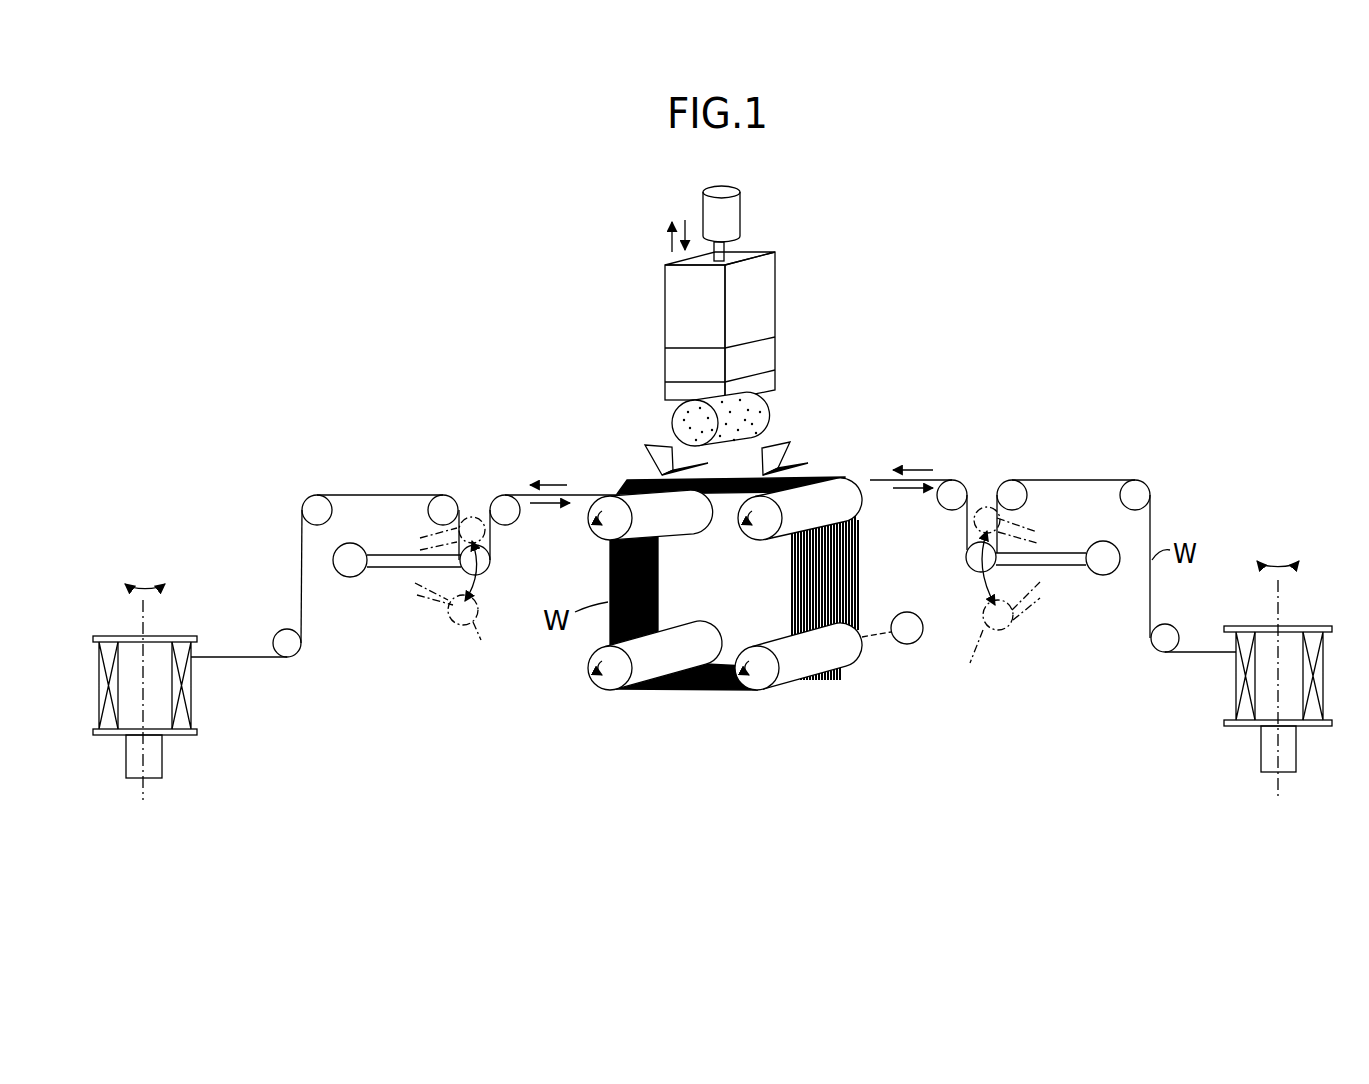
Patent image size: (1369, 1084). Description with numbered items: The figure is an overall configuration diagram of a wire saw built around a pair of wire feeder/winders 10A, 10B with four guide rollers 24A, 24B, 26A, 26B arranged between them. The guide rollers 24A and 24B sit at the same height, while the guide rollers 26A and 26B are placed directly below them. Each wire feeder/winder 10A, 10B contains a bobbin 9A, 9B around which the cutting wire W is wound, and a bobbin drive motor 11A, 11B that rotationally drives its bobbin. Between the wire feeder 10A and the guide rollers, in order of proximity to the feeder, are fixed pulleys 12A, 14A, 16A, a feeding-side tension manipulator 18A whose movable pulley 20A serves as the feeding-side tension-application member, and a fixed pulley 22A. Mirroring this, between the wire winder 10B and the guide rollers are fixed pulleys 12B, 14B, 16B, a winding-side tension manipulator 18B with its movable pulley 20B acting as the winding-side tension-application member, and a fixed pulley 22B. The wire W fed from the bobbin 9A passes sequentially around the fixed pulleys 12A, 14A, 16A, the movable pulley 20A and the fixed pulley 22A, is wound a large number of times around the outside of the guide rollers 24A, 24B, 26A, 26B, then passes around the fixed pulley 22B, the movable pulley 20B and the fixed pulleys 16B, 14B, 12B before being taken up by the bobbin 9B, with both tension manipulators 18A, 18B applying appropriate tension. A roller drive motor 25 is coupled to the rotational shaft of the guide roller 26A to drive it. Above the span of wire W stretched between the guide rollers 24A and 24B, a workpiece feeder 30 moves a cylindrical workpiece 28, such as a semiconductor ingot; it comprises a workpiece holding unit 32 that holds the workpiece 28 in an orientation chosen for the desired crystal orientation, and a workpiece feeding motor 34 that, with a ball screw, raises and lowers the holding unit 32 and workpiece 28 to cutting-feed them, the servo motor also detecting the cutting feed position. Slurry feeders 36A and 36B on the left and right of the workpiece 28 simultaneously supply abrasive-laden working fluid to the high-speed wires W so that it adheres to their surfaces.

The bobbin 9A is at (1323, 692).
The bobbin 9B is at (100, 697).
The wire feeder/winder 10A is at (1238, 737).
The wire feeder/winder 10B is at (195, 763).
The bobbin drive motor 11A is at (1293, 773).
The bobbin drive motor 11B is at (130, 780).
The fixed pulley 12A is at (1168, 625).
The fixed pulley 12B is at (287, 636).
The fixed pulley 14A is at (1135, 485).
The fixed pulley 14B is at (317, 500).
The fixed pulley 16A is at (1012, 485).
The fixed pulley 16B is at (442, 500).
The feeding-side tension manipulator 18A is at (1081, 582).
The winding-side tension manipulator 18B is at (377, 582).
The movable pulley 20A is at (986, 508).
The movable pulley 20B is at (480, 522).
The fixed pulley 22A is at (952, 485).
The fixed pulley 22B is at (505, 500).
The guide roller 24A is at (850, 508).
The guide roller 24B is at (604, 545).
The roller drive motor 25 is at (907, 647).
The guide roller 26A is at (852, 657).
The guide roller 26B is at (613, 683).
The workpiece 28 is at (680, 422).
The workpiece feeder 30 is at (787, 305).
The workpiece holding unit 32 is at (688, 392).
The workpiece feeding motor 34 is at (742, 213).
The slurry feeder 36A is at (787, 453).
The slurry feeder 36B is at (660, 467).